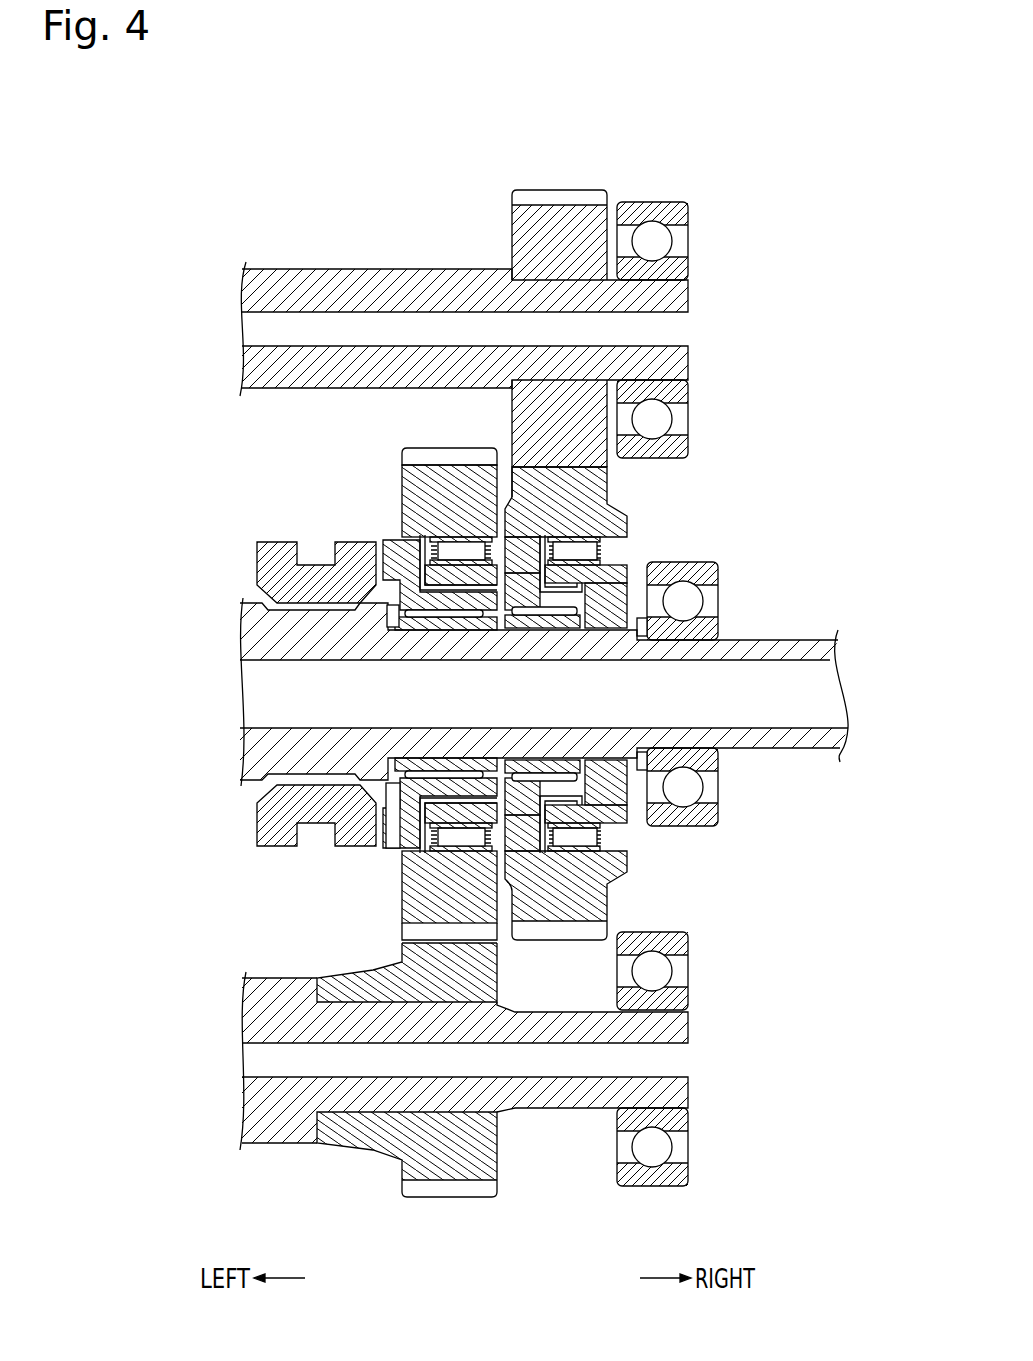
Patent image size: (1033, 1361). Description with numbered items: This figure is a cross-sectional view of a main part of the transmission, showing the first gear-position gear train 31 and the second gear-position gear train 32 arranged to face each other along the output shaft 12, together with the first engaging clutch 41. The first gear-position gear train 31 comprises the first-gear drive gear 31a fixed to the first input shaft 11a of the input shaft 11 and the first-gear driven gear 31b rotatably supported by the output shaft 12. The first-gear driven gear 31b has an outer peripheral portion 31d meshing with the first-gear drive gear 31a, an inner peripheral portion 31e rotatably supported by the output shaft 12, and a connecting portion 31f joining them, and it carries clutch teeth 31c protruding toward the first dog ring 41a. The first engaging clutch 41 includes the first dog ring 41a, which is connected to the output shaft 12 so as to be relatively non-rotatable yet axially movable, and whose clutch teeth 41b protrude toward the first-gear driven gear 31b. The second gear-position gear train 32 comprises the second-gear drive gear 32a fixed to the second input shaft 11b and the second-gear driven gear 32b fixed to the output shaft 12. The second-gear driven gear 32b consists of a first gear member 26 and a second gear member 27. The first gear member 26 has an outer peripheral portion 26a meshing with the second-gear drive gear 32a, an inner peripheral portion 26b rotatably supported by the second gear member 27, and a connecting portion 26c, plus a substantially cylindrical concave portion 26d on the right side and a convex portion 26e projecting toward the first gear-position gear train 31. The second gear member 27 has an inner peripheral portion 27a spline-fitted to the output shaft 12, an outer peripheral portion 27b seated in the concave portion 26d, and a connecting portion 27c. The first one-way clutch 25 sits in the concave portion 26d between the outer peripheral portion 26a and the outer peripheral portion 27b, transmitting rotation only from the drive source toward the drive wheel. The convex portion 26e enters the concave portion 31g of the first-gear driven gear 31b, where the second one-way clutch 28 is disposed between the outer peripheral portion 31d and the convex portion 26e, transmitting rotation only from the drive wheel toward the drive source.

The case 11 is at (394, 706).
The first input shaft 11a is at (255, 978).
The second input shaft 11b is at (248, 392).
The output shaft 12 is at (253, 757).
The first one-way clutch 25 is at (618, 545).
The first gear member 26 is at (577, 615).
The outer peripheral portion 26a is at (572, 484).
The inner peripheral portion 26b is at (554, 600).
The connecting portion 26c is at (525, 564).
The concave portion 26d is at (565, 535).
The convex portion 26e is at (472, 578).
The second gear member 27 is at (633, 691).
The inner peripheral portion 27a is at (570, 618).
The outer peripheral portion 27b is at (595, 602).
The connecting portion 27c is at (590, 575).
The second one-way clutch 28 is at (432, 548).
The first gear-position gear train 31 is at (407, 856).
The first-gear drive gear 31a is at (402, 1190).
The first-gear driven gear 31b is at (410, 449).
The clutch teeth 31c is at (388, 838).
The outer peripheral portion 31d is at (418, 476).
The inner peripheral portion 31e is at (434, 602).
The connecting portion 31f is at (400, 616).
The concave portion 31g is at (462, 536).
The second gear-position gear train 32 is at (572, 513).
The second-gear drive gear 32a is at (512, 215).
The second-gear driven gear 32b is at (603, 914).
The first engaging clutch 41 is at (270, 700).
The first dog ring 41a is at (302, 590).
The clutch teeth 41b is at (367, 832).